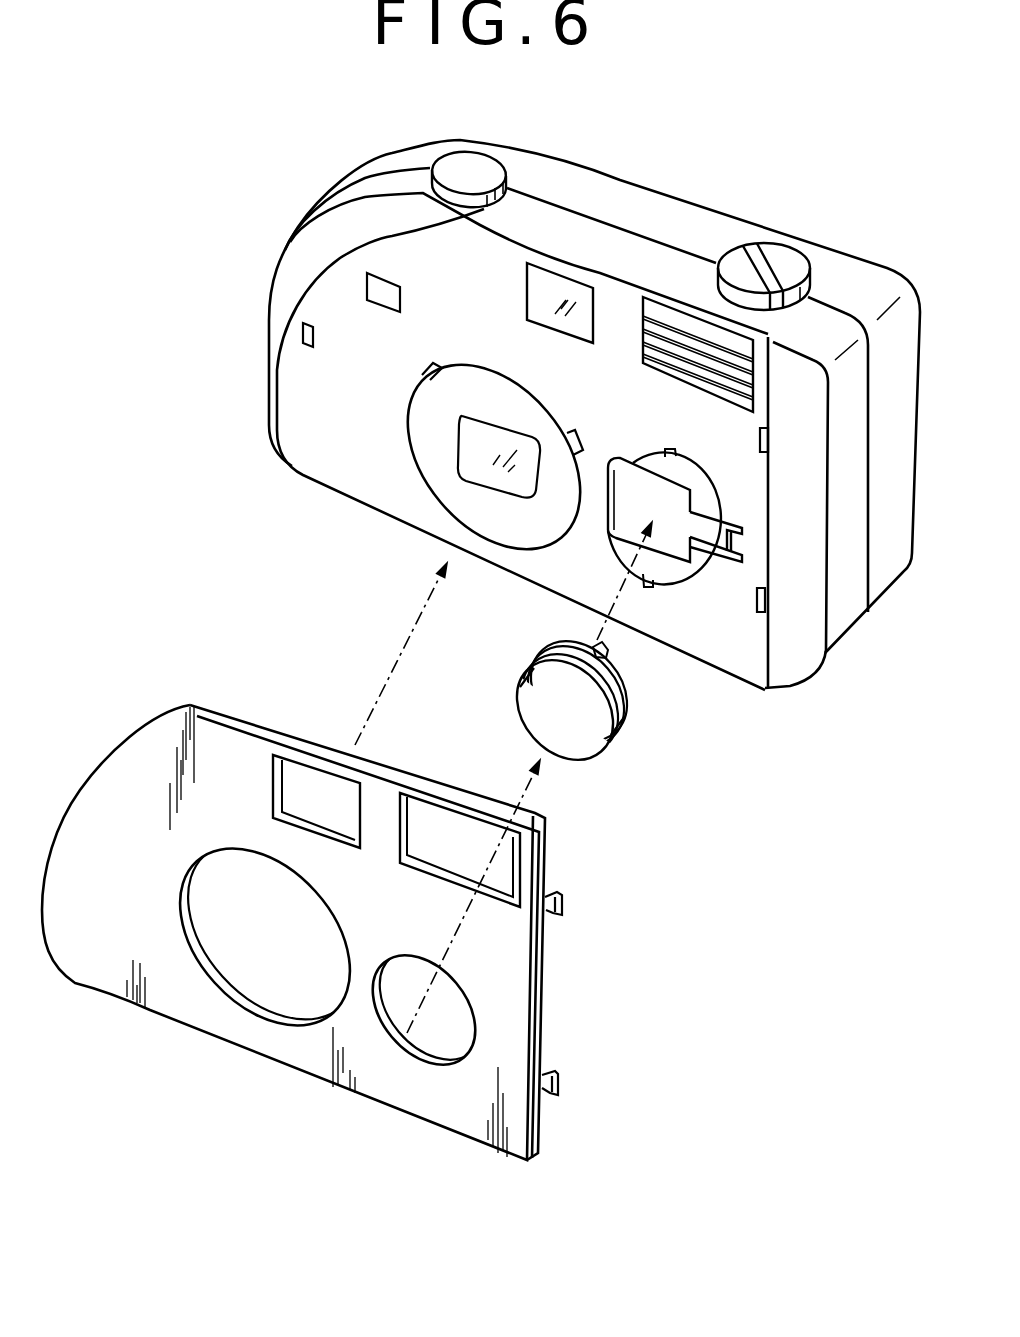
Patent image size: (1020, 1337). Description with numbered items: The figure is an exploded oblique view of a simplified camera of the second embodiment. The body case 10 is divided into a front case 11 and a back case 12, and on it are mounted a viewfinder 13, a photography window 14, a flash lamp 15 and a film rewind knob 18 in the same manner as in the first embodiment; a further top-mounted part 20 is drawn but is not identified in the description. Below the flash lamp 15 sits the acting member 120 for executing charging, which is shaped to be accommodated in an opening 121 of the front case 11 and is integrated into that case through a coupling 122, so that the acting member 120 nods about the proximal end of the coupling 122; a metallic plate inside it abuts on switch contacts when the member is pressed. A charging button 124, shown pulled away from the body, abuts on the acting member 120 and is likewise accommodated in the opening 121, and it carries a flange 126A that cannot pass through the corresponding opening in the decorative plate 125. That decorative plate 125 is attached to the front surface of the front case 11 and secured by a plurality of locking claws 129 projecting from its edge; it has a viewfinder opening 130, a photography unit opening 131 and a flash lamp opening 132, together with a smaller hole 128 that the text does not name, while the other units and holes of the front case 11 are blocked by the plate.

The body case 10 is at (624, 173).
The front case 11 is at (847, 618).
The back case 12 is at (703, 208).
The viewfinder 13 is at (533, 297).
The photography window 14 is at (460, 457).
The flash lamp 15 is at (738, 372).
The film rewind knob 18 is at (792, 262).
The shutter button 20 is at (467, 160).
The acting member 120 is at (632, 487).
The opening 121 is at (705, 500).
The coupling 122 is at (710, 535).
The charging button 124 is at (603, 737).
The flange 126A is at (630, 692).
The decorative plate 125 is at (517, 980).
The small hole 128 is at (430, 1037).
The locking claws 129 is at (563, 897).
The viewfinder opening 130 is at (293, 790).
The photography unit opening 131 is at (270, 993).
The flash lamp opening 132 is at (427, 820).